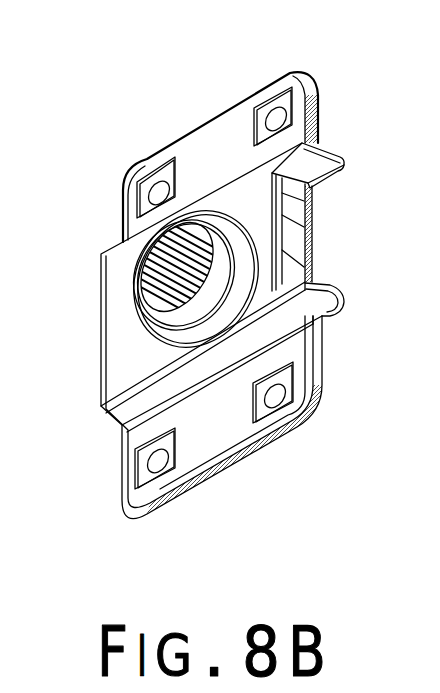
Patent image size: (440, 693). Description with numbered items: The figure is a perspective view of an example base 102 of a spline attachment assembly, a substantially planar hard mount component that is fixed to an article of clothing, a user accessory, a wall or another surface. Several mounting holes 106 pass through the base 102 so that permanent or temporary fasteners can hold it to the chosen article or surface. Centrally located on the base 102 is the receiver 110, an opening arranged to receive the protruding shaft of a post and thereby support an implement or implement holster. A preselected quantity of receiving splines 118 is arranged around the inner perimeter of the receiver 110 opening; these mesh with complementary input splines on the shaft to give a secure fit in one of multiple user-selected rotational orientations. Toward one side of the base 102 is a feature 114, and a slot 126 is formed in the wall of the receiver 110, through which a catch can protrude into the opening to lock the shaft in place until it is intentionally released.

The base 102 is at (236, 273).
The mounting holes 106 is at (163, 195).
The receiver 110 is at (130, 300).
The rib 114 is at (325, 243).
The receiving splines 118 is at (177, 268).
The slots 126 is at (207, 263).